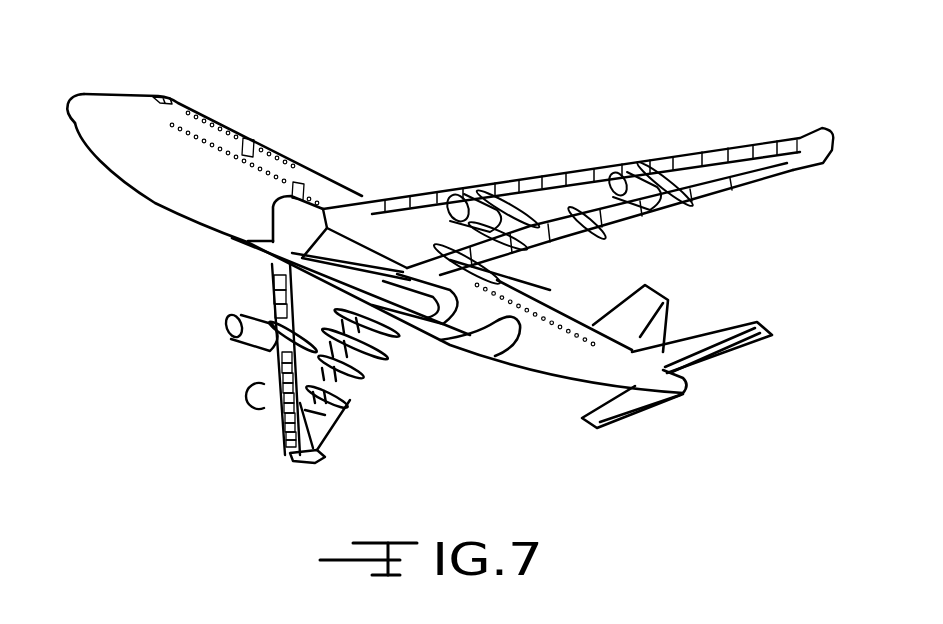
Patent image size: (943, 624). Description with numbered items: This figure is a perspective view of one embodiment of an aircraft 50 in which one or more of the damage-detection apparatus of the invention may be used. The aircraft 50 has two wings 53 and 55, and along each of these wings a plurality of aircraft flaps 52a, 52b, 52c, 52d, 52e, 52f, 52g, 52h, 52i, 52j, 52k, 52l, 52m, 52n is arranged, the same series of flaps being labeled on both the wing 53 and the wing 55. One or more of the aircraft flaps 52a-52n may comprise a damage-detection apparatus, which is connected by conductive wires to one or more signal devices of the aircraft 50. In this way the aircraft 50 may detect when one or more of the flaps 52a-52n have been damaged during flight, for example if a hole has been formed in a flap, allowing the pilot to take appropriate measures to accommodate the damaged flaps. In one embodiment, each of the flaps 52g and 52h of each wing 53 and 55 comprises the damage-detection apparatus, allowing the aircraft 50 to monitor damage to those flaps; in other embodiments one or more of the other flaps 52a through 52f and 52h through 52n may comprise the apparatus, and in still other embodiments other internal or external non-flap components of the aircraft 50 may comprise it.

The aircraft 50 is at (486, 374).
The aircraft flap 52a is at (290, 454).
The aircraft flap 52b is at (284, 448).
The aircraft flap 52c is at (284, 442).
The aircraft flap 52d is at (283, 432).
The aircraft flap 52e is at (283, 423).
The aircraft flap 52f is at (282, 412).
The aircraft flap 52g is at (282, 400).
The aircraft flap 52h is at (281, 391).
The aircraft flap 52i is at (281, 378).
The aircraft flap 52j is at (280, 365).
The aircraft flap 52k is at (280, 353).
The aircraft flap 52l is at (273, 312).
The aircraft flap 52m is at (273, 297).
The aircraft flap 52n is at (272, 280).
The wing 53 is at (313, 457).
The wing 55 is at (737, 185).